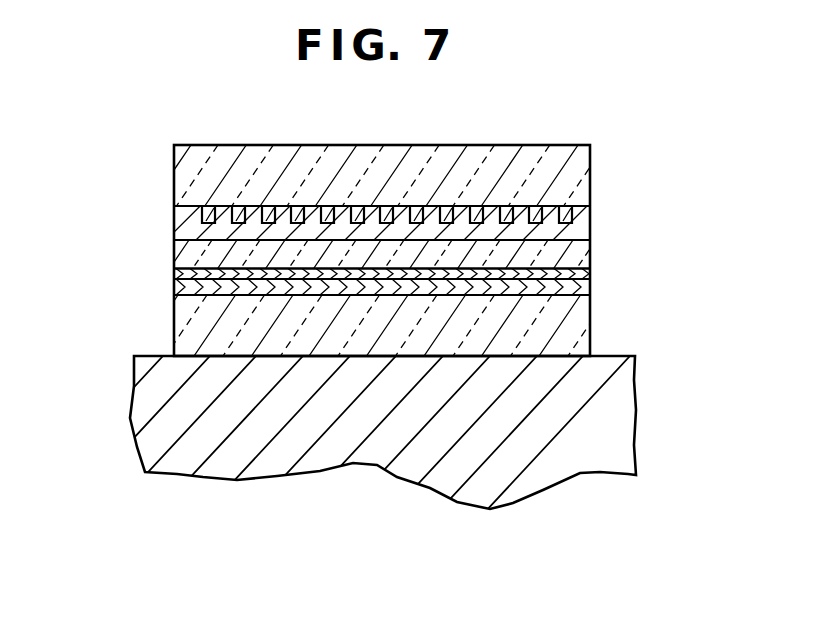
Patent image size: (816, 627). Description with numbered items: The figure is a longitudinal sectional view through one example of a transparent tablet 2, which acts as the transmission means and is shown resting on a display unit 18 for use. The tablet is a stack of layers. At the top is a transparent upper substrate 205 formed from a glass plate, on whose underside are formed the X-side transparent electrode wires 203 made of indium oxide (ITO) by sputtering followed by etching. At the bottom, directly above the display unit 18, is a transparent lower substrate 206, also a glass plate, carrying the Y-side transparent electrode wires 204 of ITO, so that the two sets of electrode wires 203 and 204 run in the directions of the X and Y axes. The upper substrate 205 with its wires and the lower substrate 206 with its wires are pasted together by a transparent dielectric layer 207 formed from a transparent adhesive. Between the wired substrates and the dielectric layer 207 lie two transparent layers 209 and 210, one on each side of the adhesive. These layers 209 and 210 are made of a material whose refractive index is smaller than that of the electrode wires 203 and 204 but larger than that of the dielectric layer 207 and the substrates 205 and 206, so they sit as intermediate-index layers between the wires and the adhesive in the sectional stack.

The transparent tablet 2 is at (472, 147).
The display unit 18 is at (576, 453).
The X-side transparent electrode wire 203 is at (212, 206).
The Y-side transparent electrode wire 204 is at (182, 287).
The transparent upper substrate 205 is at (577, 177).
The transparent lower substrate 206 is at (578, 326).
The transparent dielectric layer 207 is at (582, 261).
The transparent layer 209 is at (184, 228).
The transparent layer 210 is at (182, 275).